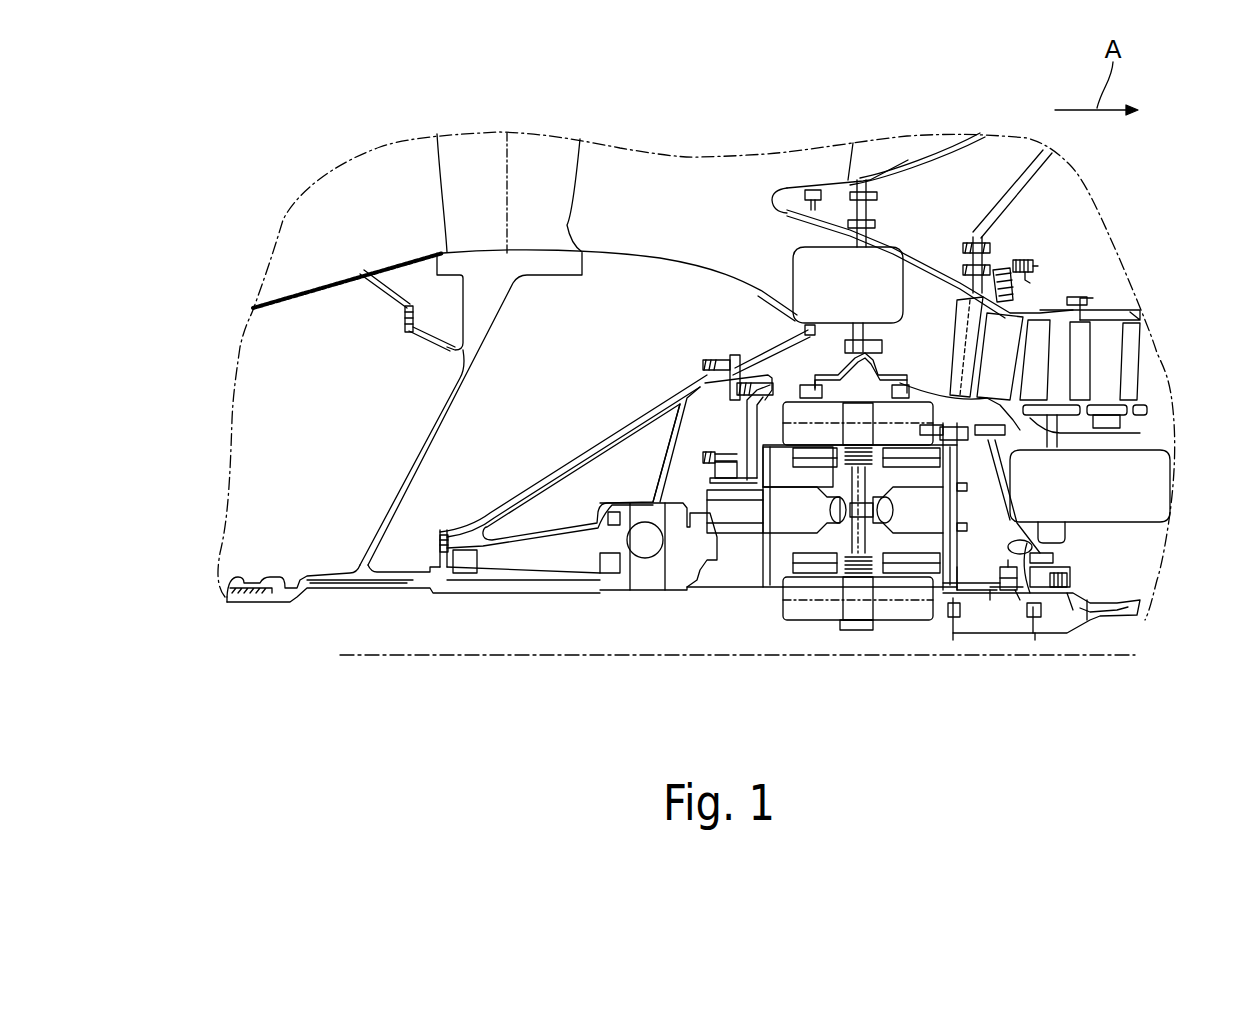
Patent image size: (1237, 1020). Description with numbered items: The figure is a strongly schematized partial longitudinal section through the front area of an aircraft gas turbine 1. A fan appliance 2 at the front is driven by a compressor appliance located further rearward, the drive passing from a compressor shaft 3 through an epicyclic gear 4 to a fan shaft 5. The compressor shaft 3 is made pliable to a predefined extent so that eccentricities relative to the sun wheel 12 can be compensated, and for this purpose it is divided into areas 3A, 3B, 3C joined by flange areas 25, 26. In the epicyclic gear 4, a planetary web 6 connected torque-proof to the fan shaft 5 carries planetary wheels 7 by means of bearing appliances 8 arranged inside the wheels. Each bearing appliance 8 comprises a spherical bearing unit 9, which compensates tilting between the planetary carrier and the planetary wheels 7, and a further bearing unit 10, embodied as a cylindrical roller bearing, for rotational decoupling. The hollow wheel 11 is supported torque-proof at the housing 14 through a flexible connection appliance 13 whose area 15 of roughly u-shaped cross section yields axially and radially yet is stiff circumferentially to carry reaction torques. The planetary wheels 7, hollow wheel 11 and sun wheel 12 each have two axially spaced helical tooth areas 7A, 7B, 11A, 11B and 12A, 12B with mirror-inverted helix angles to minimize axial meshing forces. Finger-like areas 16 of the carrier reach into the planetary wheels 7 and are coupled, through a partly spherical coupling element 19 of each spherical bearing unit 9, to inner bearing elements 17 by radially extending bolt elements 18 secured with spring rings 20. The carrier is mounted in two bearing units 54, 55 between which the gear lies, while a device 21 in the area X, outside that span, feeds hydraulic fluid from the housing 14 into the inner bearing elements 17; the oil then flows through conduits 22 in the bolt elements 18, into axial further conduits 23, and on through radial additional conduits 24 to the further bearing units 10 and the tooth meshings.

The aircraft gas turbine 1 is at (245, 230).
The fan appliance 2 is at (426, 191).
The compressor shaft 3 is at (1130, 602).
The area of the compressor shaft 3A is at (902, 600).
The area of the compressor shaft 3B is at (973, 600).
The area of the compressor shaft 3C is at (1087, 617).
The epicyclic gear 4 is at (710, 622).
The fan shaft 5 is at (517, 577).
The planetary web 6 is at (713, 565).
The planetary wheels 7 is at (847, 600).
The tooth area of the planetary wheel 7A is at (805, 600).
The tooth area of the planetary wheel 7B is at (927, 600).
The bearing appliances 8 is at (817, 600).
The spherical bearing unit 9 is at (975, 500).
The further bearing unit 10 is at (803, 430).
The hollow wheel 11 is at (798, 370).
The tooth area of the hollow wheel 11A is at (842, 402).
The tooth area of the hollow wheel 11B is at (882, 390).
The sun wheel 12 is at (887, 600).
The tooth area of the sun wheel 12A is at (810, 600).
The tooth area of the sun wheel 12B is at (907, 600).
The flexible connection appliance 13 is at (882, 364).
The housing 14 is at (905, 507).
The area with u-shaped cross section 15 is at (870, 362).
The finger-like areas 16 is at (880, 600).
The inner bearing elements 17 is at (1057, 523).
The bolt elements 18 is at (850, 537).
The coupling element 19 is at (840, 502).
The spring rings 20 is at (747, 437).
The device 21 is at (1020, 600).
The lubricating and cooling oil conduits 22 is at (845, 507).
The further conduits 23 is at (760, 460).
The additional conduits 24 is at (715, 365).
The flange area 25 is at (953, 643).
The flange area 26 is at (1070, 605).
The bearing unit 54 is at (703, 460).
The bearing unit 55 is at (993, 600).
The area of the aircraft gas turbine X is at (1035, 643).